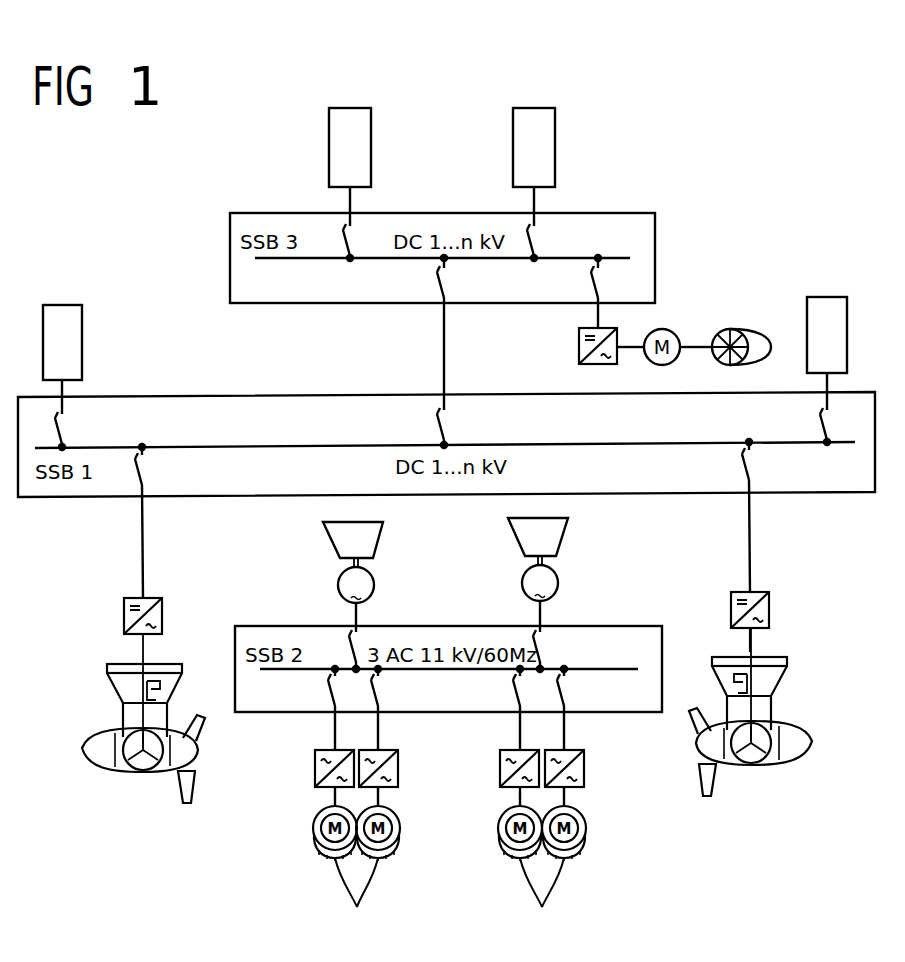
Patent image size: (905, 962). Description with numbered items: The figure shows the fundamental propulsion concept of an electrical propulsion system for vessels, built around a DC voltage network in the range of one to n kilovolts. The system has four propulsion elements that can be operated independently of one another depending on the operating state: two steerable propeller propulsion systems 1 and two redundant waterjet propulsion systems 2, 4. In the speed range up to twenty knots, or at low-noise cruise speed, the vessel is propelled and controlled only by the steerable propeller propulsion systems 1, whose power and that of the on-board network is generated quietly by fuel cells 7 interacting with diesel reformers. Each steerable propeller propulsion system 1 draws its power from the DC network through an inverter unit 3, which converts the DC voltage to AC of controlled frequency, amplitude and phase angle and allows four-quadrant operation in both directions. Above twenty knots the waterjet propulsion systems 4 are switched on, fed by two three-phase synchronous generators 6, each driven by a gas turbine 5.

The steerable propeller propulsion system 1 is at (102, 748).
The waterjet propulsion system 2 is at (449, 868).
The inverter unit 3 is at (122, 613).
The waterjet propulsion system 4 is at (315, 768).
The turbine / prime mover 5 is at (345, 543).
The three-phase synchronous generator 6 is at (340, 588).
The fuel cell 7 is at (350, 115).